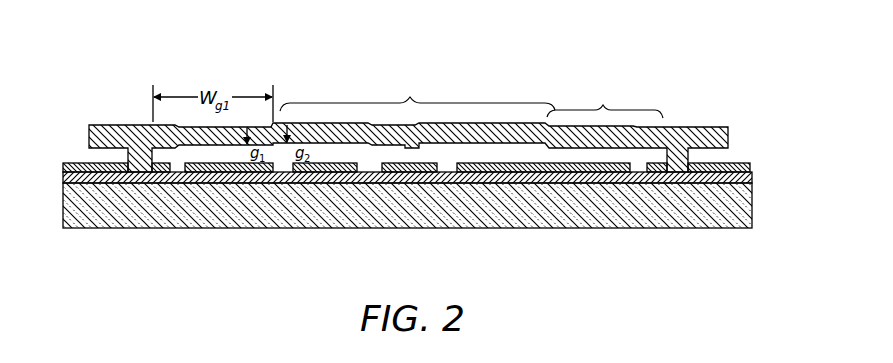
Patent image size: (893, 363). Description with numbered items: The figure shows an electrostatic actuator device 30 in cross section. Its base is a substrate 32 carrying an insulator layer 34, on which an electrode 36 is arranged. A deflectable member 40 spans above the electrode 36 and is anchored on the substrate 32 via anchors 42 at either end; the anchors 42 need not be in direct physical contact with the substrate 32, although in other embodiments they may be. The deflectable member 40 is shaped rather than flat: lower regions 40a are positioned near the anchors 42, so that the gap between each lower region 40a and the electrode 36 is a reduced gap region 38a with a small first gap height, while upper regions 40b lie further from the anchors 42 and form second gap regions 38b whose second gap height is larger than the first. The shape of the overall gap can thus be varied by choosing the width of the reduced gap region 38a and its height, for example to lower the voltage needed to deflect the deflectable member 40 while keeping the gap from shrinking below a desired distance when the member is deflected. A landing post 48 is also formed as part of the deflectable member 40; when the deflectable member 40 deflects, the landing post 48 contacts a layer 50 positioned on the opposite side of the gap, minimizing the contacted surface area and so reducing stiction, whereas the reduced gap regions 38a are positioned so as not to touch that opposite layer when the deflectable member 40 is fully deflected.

The electrostatic actuator device 30 is at (714, 72).
The substrate 32 is at (745, 210).
The insulator layer 34 is at (750, 176).
The electrode 36 is at (623, 172).
The reduced gap region 38a is at (193, 153).
The second gap region 38b is at (333, 150).
The deflectable member 40 is at (724, 130).
The lower region 40a is at (237, 238).
The upper region 40b is at (414, 99).
The anchor 42 is at (130, 157).
The landing post 48 is at (411, 148).
The layer 50 is at (404, 165).